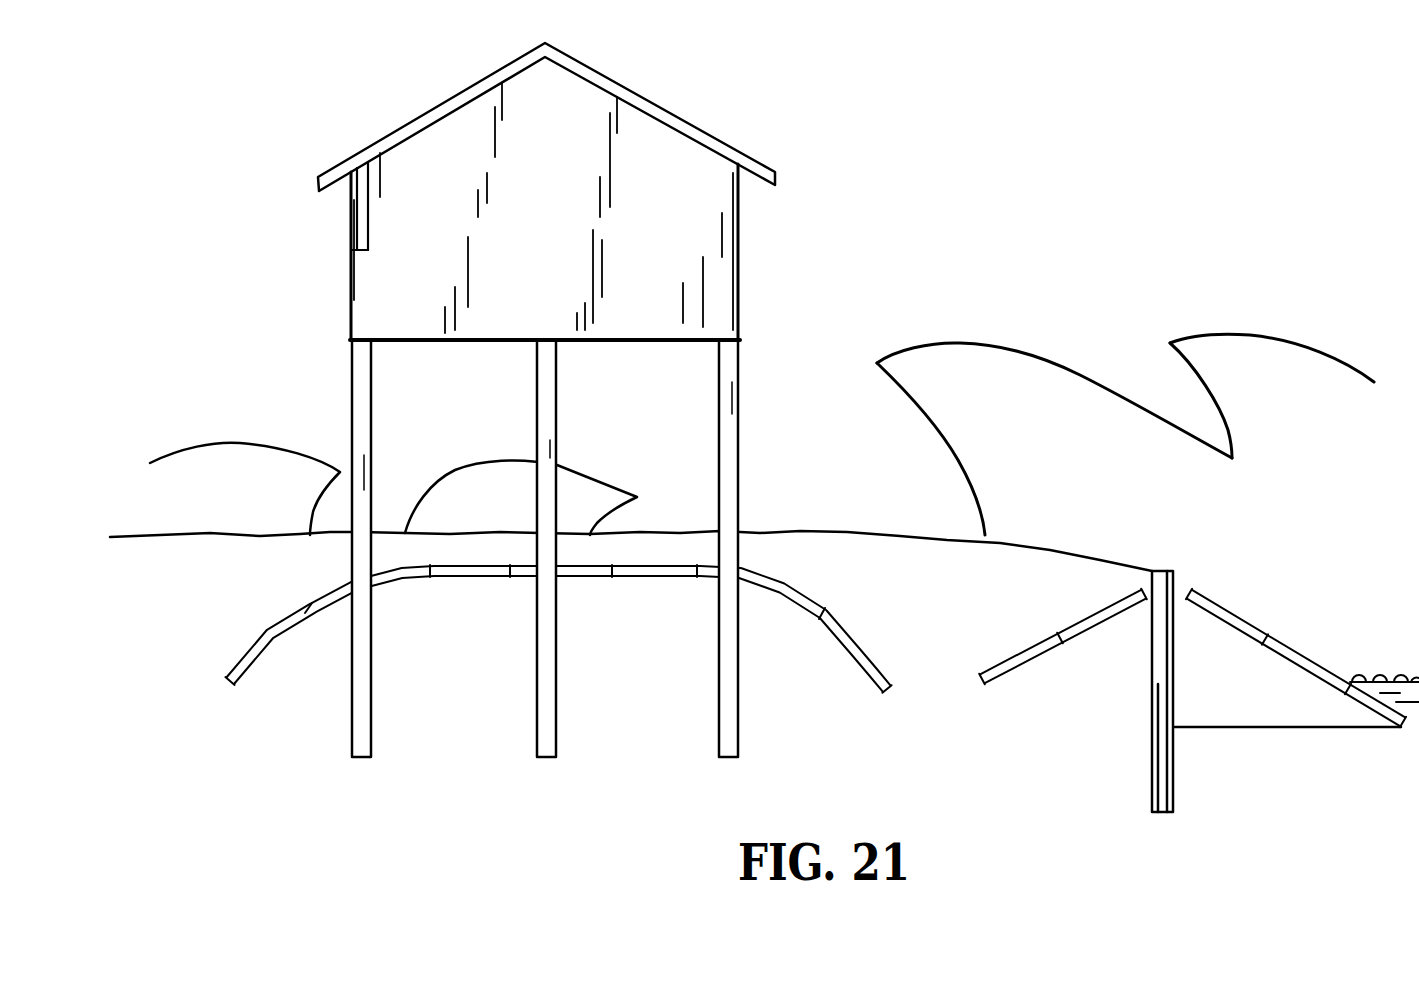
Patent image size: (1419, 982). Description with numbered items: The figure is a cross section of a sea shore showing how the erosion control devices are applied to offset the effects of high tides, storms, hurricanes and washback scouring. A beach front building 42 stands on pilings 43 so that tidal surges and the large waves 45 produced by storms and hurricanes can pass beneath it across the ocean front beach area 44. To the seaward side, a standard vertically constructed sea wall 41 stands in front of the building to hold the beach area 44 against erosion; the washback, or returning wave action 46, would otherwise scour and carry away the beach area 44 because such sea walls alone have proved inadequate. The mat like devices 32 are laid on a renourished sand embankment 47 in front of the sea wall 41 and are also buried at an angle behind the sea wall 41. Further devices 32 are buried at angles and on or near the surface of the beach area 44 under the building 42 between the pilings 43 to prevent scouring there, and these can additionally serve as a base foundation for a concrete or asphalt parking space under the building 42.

The mat like devices 32 is at (224, 688).
The sea wall 41 is at (1154, 705).
The building 42 is at (367, 253).
The pilings 43 is at (352, 373).
The beach area 44 is at (261, 578).
The large waves 45 is at (1001, 443).
The returning wave action 46 is at (191, 510).
The sand embankment 47 is at (1214, 680).